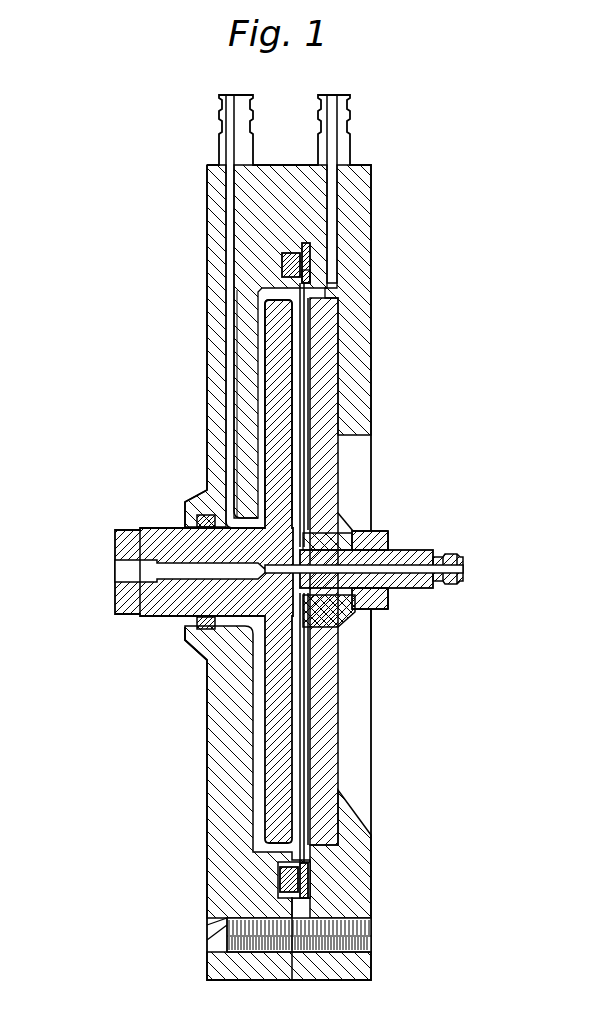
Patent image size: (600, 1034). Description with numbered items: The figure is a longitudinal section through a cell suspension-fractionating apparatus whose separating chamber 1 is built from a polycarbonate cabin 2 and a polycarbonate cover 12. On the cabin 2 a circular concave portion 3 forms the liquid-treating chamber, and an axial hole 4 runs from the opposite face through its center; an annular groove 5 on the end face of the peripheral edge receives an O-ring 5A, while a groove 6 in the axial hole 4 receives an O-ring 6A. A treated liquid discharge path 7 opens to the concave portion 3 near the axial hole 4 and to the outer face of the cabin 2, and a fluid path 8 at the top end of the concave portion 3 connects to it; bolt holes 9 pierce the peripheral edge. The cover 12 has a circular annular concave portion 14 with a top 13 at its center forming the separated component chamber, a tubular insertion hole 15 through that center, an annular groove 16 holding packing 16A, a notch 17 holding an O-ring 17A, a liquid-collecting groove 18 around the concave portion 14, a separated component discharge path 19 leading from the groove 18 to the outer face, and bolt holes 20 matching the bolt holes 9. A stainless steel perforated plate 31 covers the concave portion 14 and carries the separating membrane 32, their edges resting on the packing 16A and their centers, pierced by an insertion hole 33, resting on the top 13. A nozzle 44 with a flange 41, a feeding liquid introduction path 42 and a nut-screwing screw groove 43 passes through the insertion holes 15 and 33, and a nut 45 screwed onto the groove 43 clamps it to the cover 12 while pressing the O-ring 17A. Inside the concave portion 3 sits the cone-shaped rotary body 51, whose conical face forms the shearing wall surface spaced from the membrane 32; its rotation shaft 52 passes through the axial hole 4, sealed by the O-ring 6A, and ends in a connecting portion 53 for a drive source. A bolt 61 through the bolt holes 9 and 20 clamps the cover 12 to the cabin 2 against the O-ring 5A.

The separating chamber 1 is at (220, 805).
The cabin 2 is at (207, 203).
The circular concave portion 3 is at (262, 338).
The axial hole 4 is at (172, 615).
The annular groove 5 is at (290, 250).
The O-ring 5A is at (244, 266).
The groove 6 is at (203, 655).
The O-ring 6A is at (205, 630).
The treated liquid discharge path 7 is at (234, 246).
The fluid path 8 is at (255, 296).
The bolt holes 9 is at (248, 960).
The cover 12 is at (360, 200).
The top 13 is at (342, 630).
The circular annular concave portion 14 is at (310, 410).
The tubular insertion hole 15 is at (343, 622).
The annular groove 16 is at (312, 262).
The packing 16A is at (312, 275).
The notch 17 is at (353, 512).
The O-ring 17A is at (355, 617).
The liquid-collecting groove 18 is at (318, 845).
The separated component discharge path 19 is at (340, 155).
The bolt holes 20 is at (330, 953).
The perforated plate 31 is at (306, 355).
The separating membrane 32 is at (300, 375).
The insertion hole 33 is at (352, 485).
The flange 41 is at (343, 647).
The feeding liquid introduction path 42 is at (470, 570).
The nut-screwing screw groove 43 is at (400, 540).
The nozzle 44 is at (455, 585).
The nut 45 is at (385, 532).
The rotary body 51 is at (270, 740).
The rotation shaft 52 is at (118, 605).
The connecting portion 53 is at (115, 568).
The bolt 61 is at (212, 935).